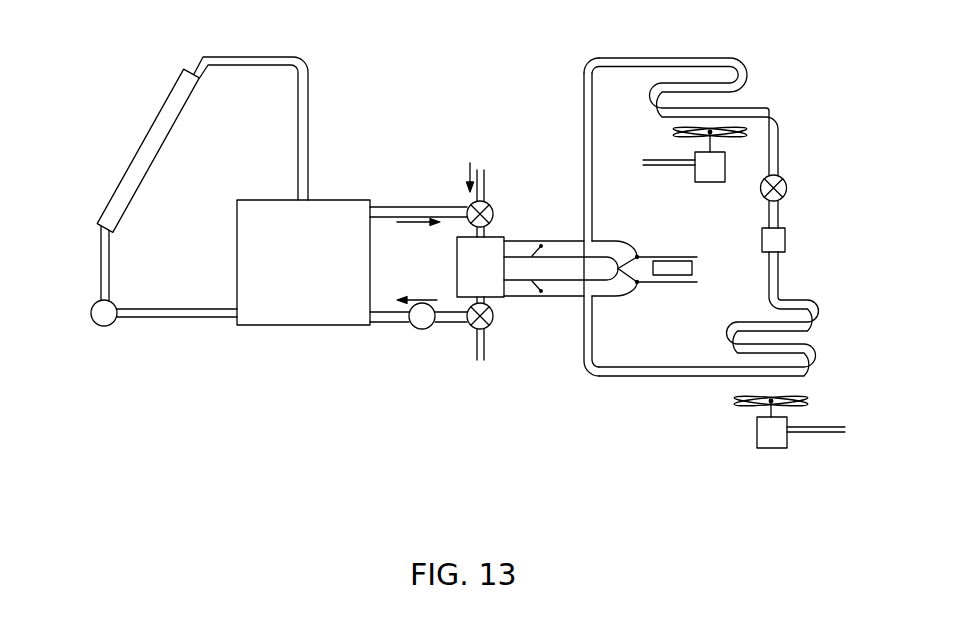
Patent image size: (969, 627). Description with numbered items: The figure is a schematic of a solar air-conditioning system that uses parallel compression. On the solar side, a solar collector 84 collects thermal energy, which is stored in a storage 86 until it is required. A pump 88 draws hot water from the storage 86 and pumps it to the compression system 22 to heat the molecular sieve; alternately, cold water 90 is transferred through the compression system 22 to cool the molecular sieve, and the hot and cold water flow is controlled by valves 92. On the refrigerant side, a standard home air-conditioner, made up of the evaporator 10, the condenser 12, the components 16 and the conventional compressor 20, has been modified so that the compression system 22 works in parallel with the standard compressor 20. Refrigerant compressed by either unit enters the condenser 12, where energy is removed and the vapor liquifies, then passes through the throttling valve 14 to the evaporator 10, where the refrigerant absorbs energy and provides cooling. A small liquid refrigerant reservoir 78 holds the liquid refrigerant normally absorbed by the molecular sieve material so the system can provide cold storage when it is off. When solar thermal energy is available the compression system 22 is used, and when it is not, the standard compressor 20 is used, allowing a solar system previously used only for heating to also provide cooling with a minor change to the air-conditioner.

The evaporator 10 is at (685, 62).
The condenser 12 is at (818, 355).
The throttling valve 14 is at (794, 179).
The air-conditioner component 16 is at (712, 172).
The conventional compressor 20 is at (665, 261).
The compression system 22 is at (480, 267).
The liquid refrigerant reservoir 78 is at (786, 242).
The solar collector 84 is at (160, 133).
The storage 86 is at (303, 262).
The pump 88 is at (102, 326).
The cold water 90 is at (484, 168).
The valves 92 is at (492, 207).